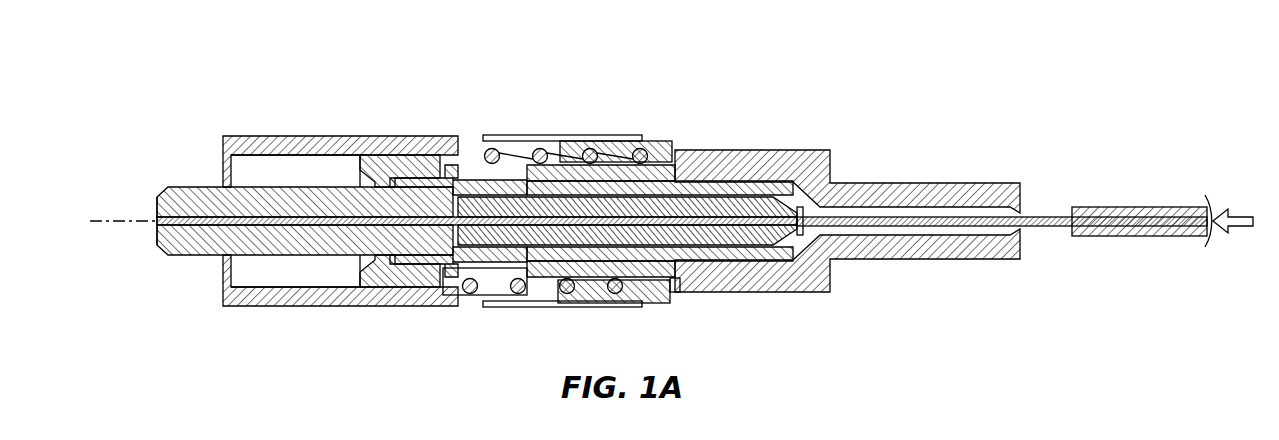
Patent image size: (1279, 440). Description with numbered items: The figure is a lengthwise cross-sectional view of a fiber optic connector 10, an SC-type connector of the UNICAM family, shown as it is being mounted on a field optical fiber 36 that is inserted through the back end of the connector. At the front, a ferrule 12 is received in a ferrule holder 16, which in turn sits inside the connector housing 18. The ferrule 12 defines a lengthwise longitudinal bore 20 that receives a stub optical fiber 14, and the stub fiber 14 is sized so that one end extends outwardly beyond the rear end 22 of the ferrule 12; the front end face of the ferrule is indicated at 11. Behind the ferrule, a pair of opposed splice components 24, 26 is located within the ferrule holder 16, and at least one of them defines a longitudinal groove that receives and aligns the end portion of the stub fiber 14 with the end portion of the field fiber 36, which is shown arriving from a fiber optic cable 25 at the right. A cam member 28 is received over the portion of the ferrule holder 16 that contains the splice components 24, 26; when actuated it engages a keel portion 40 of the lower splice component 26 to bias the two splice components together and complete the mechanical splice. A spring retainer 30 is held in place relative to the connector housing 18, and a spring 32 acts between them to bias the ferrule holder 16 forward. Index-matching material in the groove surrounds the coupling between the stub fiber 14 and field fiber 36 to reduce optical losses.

The fiber optic connector 10 is at (609, 90).
The ferrule end face 11 is at (160, 233).
The ferrule 12 is at (182, 187).
The stub optical fiber 14 is at (208, 226).
The ferrule holder 16 is at (420, 288).
The connector housing 18 is at (322, 307).
The longitudinal bore 20 is at (258, 227).
The rear end of the ferrule 22 is at (437, 180).
The splice component 24 is at (742, 197).
The fiber optic cable 25 is at (1160, 206).
The lower splice component 26 is at (717, 268).
The cam member 28 is at (805, 150).
The spring retainer 30 is at (655, 142).
The spring 32 is at (514, 160).
The field optical fiber 36 is at (960, 226).
The keel portion 40 is at (683, 282).